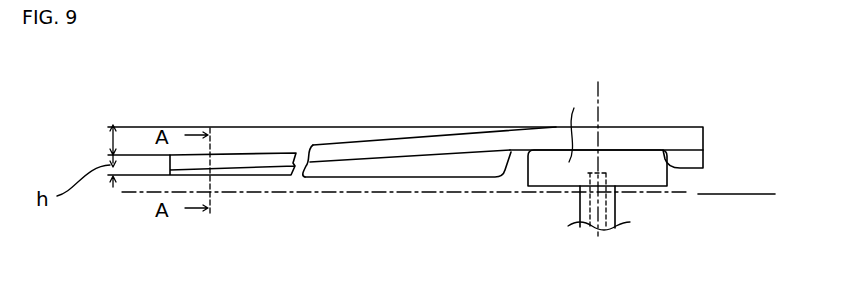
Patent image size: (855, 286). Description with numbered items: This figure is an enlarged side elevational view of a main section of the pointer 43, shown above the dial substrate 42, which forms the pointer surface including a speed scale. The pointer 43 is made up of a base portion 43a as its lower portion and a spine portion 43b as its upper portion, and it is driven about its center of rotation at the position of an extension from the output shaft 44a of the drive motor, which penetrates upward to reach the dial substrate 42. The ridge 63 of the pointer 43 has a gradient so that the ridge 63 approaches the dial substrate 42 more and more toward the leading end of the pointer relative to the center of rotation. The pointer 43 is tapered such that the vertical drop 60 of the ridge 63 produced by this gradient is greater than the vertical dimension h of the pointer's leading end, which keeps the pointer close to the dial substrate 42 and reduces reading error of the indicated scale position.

The vertical drop 60 is at (113, 142).
The ridge 63 is at (262, 150).
The pointer 43 is at (359, 132).
The spine portion 43b is at (424, 151).
The base portion 43a is at (368, 167).
The output shaft 44a is at (607, 176).
The dial substrate 42 is at (727, 194).